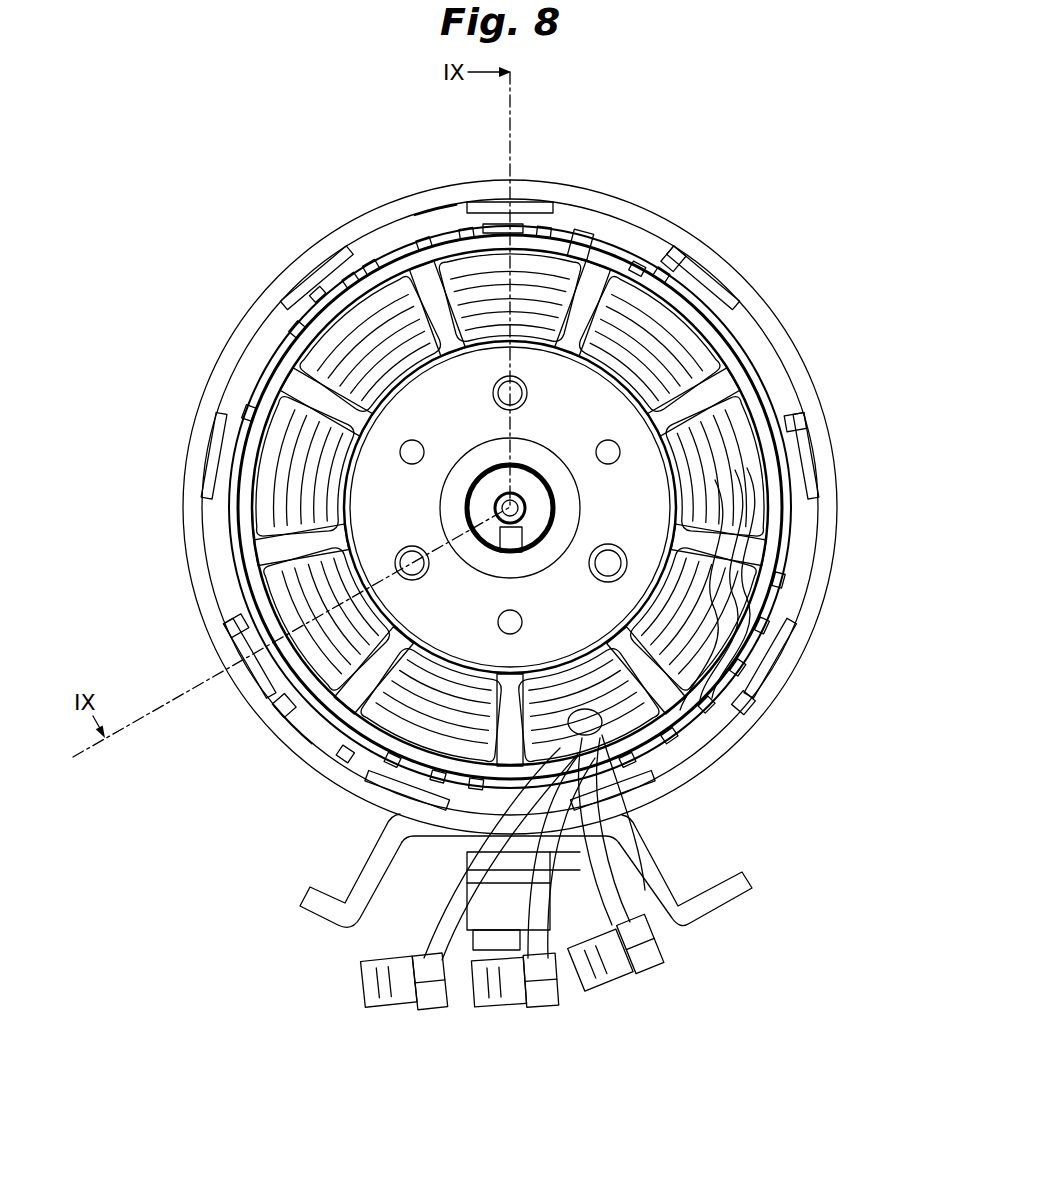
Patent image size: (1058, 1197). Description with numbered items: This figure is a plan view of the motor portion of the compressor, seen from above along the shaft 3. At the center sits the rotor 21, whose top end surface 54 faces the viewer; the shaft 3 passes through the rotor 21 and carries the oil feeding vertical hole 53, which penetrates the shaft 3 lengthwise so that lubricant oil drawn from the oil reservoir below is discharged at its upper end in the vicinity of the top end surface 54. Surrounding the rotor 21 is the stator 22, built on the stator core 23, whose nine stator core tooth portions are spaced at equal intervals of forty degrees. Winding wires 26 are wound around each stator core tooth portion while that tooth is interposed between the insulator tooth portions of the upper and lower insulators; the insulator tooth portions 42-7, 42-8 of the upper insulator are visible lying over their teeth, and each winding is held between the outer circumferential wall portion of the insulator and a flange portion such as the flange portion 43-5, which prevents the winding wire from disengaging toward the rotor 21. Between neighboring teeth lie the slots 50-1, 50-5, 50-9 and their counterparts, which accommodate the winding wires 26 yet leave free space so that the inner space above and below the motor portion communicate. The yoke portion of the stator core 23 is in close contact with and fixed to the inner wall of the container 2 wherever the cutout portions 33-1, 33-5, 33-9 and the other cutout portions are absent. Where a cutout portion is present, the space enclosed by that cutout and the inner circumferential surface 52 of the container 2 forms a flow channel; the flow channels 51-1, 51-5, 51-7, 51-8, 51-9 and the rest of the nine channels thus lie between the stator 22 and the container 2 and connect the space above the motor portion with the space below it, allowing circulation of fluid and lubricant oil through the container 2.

The container 2 is at (840, 520).
The shaft 3 is at (452, 490).
The rotor 21 is at (707, 700).
The stator 22 is at (826, 590).
The stator core 23 is at (755, 714).
The winding wires 26 is at (315, 738).
The cutout portion 33-1 is at (807, 423).
The cutout portion 33-5 is at (235, 635).
The cutout portion 33-9 is at (683, 247).
The insulator tooth portion 42-7 is at (318, 298).
The insulator tooth portion 42-8 is at (432, 208).
The flange portion 43-5 is at (277, 697).
The slot 50-1 is at (707, 545).
The slot 50-5 is at (237, 537).
The slot 50-9 is at (693, 400).
The flow channel 51-1 is at (813, 465).
The flow channel 51-5 is at (255, 655).
The flow channel 51-7 is at (325, 265).
The flow channel 51-8 is at (492, 200).
The flow channel 51-9 is at (708, 283).
The inner circumferential surface 52 is at (343, 755).
The oil feeding vertical hole 53 is at (455, 508).
The top end surface 54 is at (395, 432).